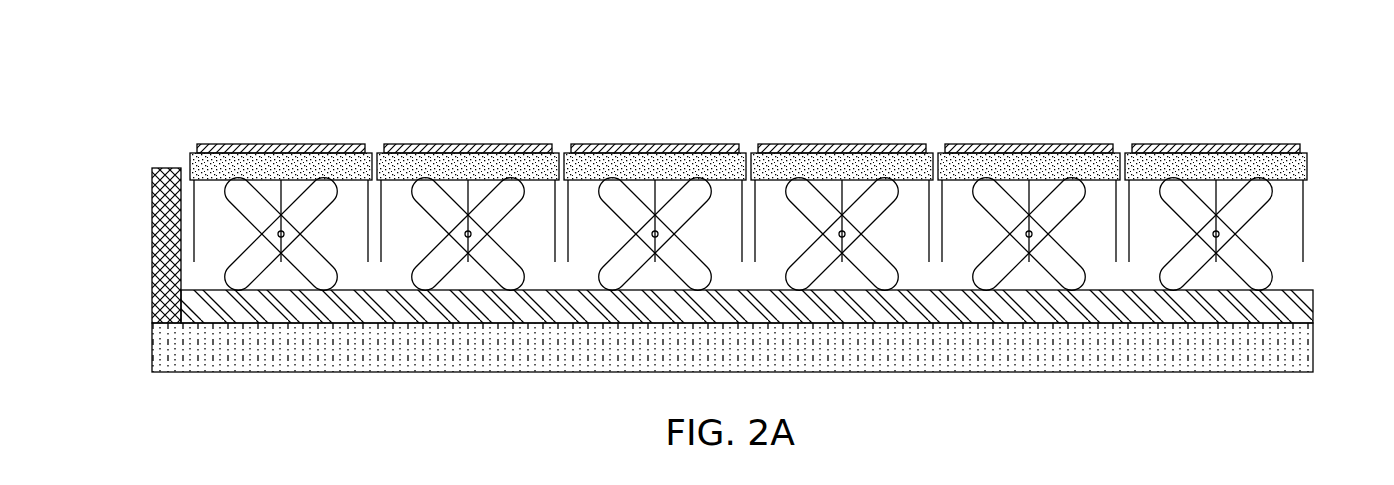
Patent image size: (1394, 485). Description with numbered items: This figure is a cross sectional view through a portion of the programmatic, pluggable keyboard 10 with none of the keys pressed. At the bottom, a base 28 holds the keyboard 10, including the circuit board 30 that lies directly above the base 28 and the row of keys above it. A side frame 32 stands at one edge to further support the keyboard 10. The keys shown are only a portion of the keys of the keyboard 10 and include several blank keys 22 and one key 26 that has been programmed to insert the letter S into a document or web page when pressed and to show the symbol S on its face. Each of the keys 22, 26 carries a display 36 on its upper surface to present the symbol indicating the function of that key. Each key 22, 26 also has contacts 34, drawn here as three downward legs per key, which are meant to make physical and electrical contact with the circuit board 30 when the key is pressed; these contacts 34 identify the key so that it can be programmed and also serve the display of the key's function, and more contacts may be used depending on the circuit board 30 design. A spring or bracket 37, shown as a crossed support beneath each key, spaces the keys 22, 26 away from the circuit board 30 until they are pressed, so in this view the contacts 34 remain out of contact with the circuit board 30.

The programmatic, pluggable keyboard 10 is at (1262, 111).
The blank keys 22 is at (729, 173).
The key 26 is at (842, 173).
The base 28 is at (1314, 347).
The circuit board 30 is at (1314, 303).
The side frame 32 is at (152, 214).
The contacts 34 is at (1307, 218).
The display 36 is at (904, 143).
The spring or bracket 37 is at (238, 277).